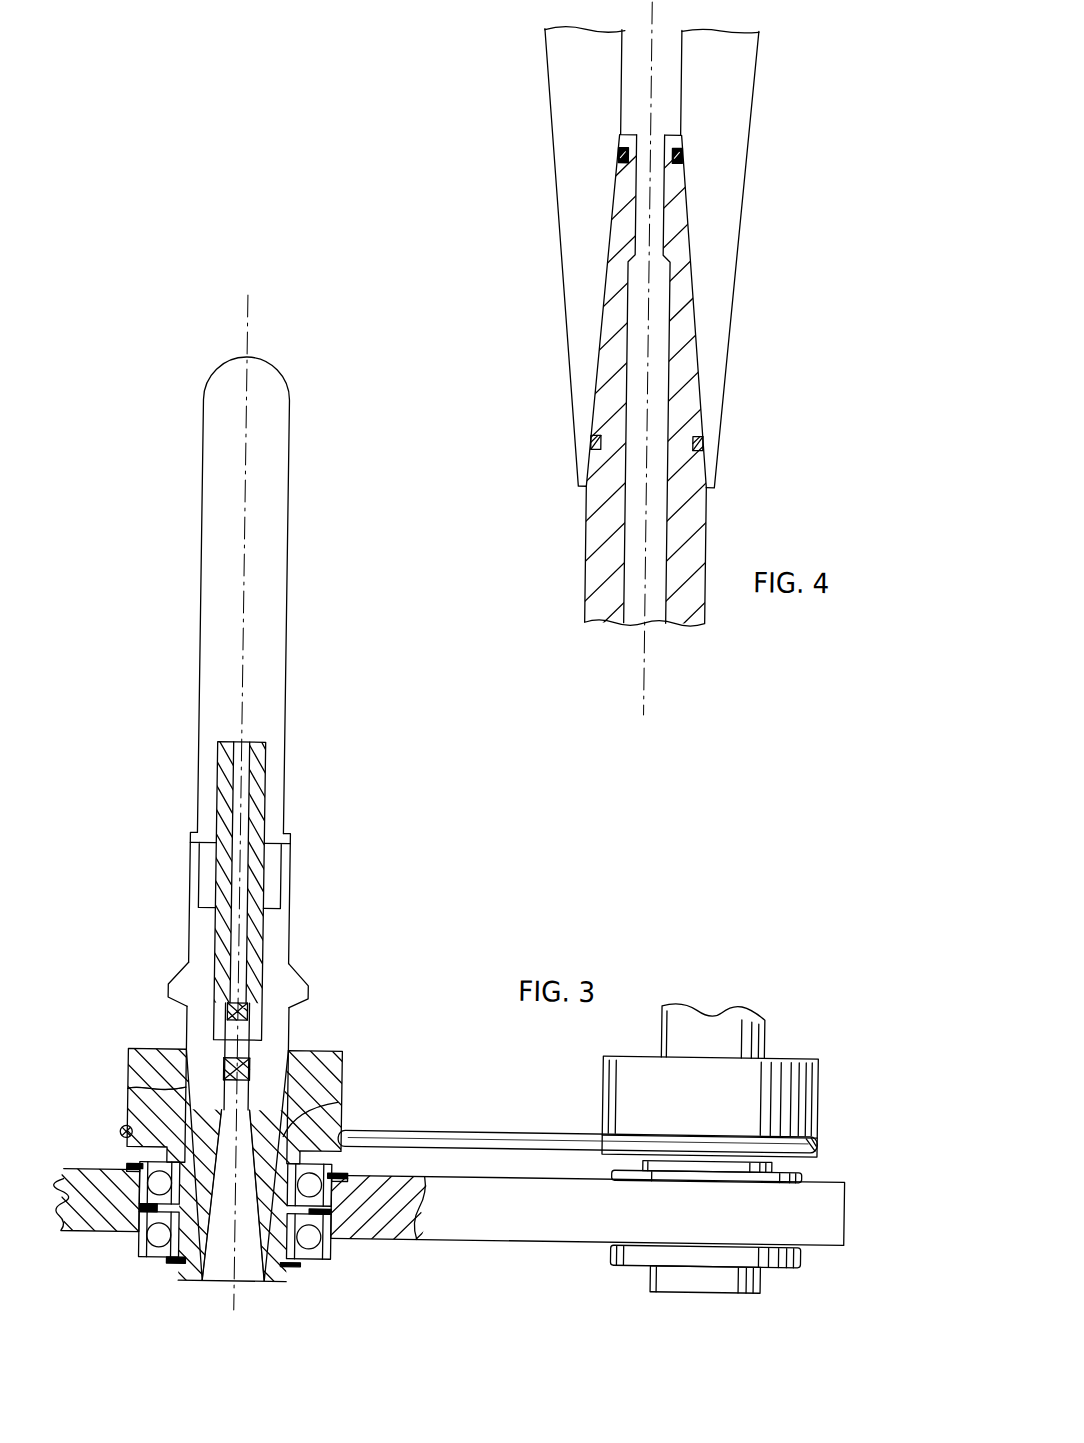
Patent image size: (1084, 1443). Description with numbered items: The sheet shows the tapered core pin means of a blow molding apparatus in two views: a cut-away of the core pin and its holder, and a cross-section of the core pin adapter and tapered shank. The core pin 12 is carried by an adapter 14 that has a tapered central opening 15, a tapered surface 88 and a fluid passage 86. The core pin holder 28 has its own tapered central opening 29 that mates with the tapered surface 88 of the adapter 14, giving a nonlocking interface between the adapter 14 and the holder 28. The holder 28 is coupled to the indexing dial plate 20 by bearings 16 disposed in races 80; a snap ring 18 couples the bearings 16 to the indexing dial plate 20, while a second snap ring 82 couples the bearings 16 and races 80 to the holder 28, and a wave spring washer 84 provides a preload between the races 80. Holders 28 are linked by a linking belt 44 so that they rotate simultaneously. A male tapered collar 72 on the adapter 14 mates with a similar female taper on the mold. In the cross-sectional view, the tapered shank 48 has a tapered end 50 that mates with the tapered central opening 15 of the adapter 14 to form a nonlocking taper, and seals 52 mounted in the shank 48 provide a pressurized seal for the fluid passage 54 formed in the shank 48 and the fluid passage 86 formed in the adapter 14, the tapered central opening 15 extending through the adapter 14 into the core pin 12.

In FIG. 3, the core pin 12 is at (279, 525).
In FIG. 4, the adapter 14 is at (745, 127).
In FIG. 3, the adapter 14 is at (287, 919).
In FIG. 4, the tapered central opening 15 is at (685, 217).
In FIG. 3, the tapered central opening 15 is at (225, 1250).
In FIG. 3, the bearing 16 is at (143, 1262).
In FIG. 3, the snap ring 18 is at (128, 1167).
In FIG. 3, the indexing dial plate 20 is at (62, 1230).
In FIG. 3, the core pin holder 28 is at (339, 1051).
In FIG. 3, the tapered central opening 29 is at (339, 1112).
In FIG. 3, the linking belt 44 is at (120, 1128).
In FIG. 4, the shank 48 is at (709, 527).
In FIG. 4, the tapered end 50 is at (700, 359).
In FIG. 4, the seals 52 is at (610, 150).
In FIG. 4, the fluid passage 54 is at (656, 598).
In FIG. 3, the tapered collar 72 is at (298, 977).
In FIG. 3, the races 80 is at (143, 1163).
In FIG. 3, the snap ring 82 is at (172, 1265).
In FIG. 3, the wave spring washer 84 is at (366, 1221).
In FIG. 4, the fluid passage 86 is at (660, 94).
In FIG. 3, the fluid passage 86 is at (235, 794).
In FIG. 3, the tapered surface 88 is at (127, 1090).